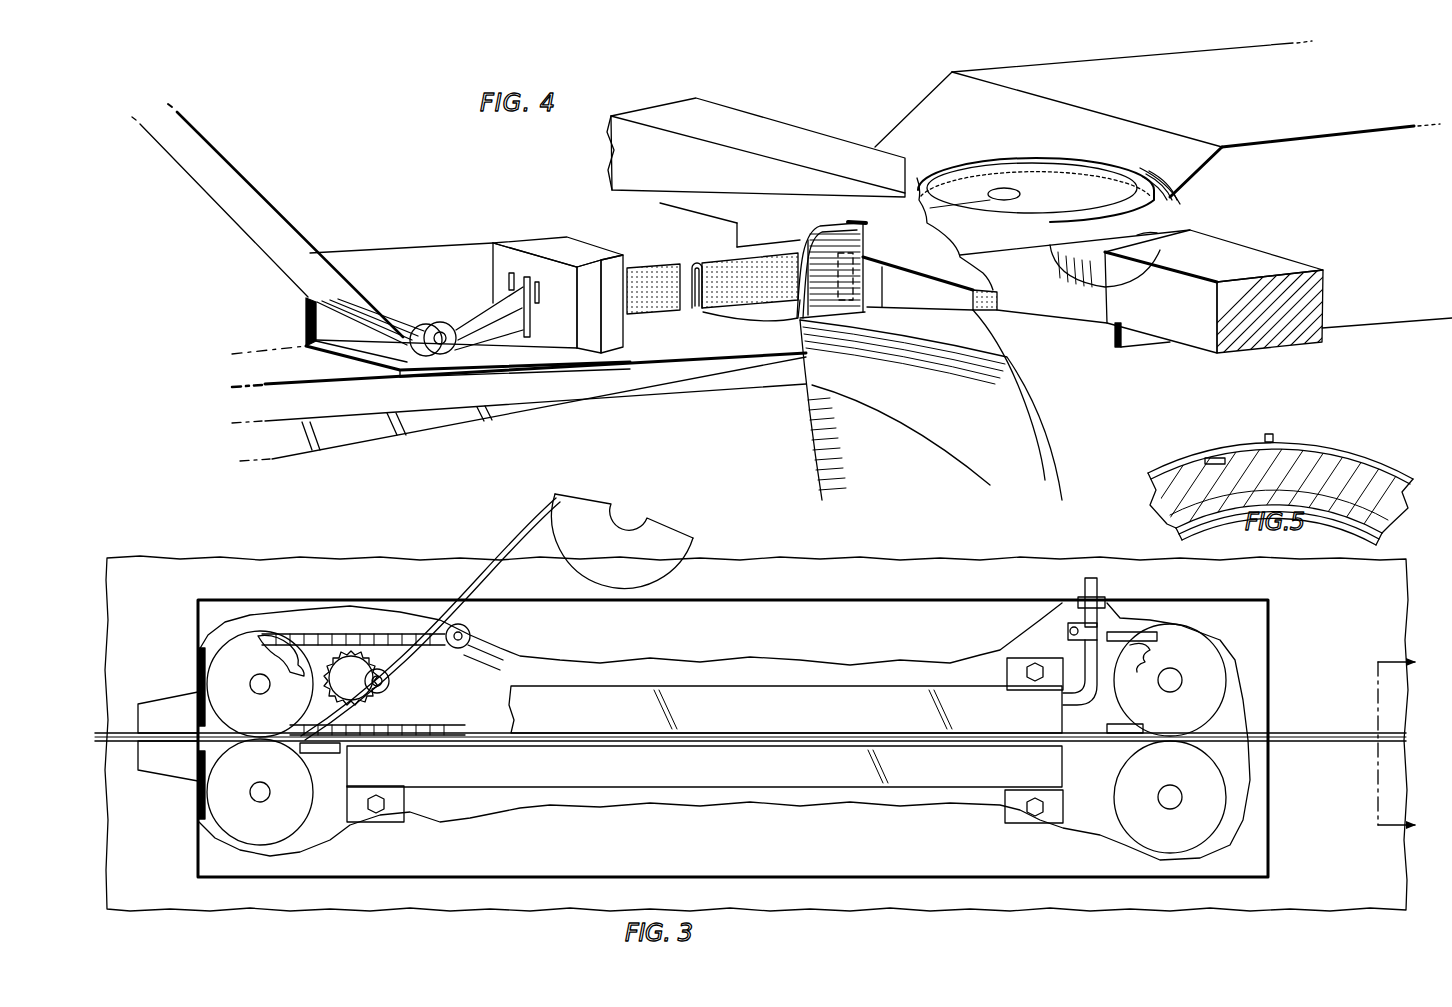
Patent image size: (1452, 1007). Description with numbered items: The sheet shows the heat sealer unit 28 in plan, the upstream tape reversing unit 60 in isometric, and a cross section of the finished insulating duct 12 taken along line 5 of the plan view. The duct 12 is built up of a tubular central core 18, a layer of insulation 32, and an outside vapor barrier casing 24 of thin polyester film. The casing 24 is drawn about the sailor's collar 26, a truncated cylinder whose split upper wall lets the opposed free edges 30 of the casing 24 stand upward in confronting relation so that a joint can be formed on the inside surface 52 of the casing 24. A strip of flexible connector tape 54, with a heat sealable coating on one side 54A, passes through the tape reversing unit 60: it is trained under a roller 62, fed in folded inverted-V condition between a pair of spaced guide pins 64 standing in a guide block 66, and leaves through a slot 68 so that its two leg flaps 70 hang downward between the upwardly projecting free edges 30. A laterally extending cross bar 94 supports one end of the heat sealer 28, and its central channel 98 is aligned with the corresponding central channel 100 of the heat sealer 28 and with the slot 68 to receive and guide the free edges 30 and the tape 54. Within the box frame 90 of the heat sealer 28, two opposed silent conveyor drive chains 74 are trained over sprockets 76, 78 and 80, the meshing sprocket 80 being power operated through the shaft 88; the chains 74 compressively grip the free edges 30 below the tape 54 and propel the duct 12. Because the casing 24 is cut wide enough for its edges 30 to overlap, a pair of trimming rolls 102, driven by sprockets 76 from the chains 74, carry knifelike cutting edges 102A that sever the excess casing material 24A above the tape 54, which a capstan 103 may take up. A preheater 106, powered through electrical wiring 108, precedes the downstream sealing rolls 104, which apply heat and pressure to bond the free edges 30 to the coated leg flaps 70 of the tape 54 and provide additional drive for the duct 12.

In FIG. 5, the insulating duct 12 is at (1369, 455).
In FIG. 3, the insulating duct 12 is at (1347, 640).
In FIG. 4, the tubular central core 18 is at (340, 432).
In FIG. 5, the tubular central core 18 is at (1348, 516).
In FIG. 4, the outside vapor barrier casing 24 is at (891, 431).
In FIG. 5, the outside vapor barrier casing 24 is at (1190, 453).
In FIG. 4, the excess casing material 24A is at (1149, 193).
In FIG. 3, the excess casing material 24A is at (512, 537).
In FIG. 4, the sailor's collar 26 is at (1004, 377).
In FIG. 4, the heat sealer unit 28 is at (994, 77).
In FIG. 3, the heat sealer unit 28 is at (777, 598).
In FIG. 4, the free edges of the casing 30 is at (827, 223).
In FIG. 3, the free edges of the casing 30 is at (138, 718).
In FIG. 4, the insulation 32 is at (303, 352).
In FIG. 5, the insulation 32 is at (1172, 497).
In FIG. 4, the inside surface of the casing 52 is at (798, 257).
In FIG. 5, the inside surface of the casing 52 is at (1226, 458).
In FIG. 4, the connector tape 54 is at (254, 226).
In FIG. 5, the connector tape 54 is at (1237, 462).
In FIG. 3, the connector tape 54 is at (124, 747).
In FIG. 4, the coated side of the tape 54A is at (283, 216).
In FIG. 5, the coated side of the tape 54A is at (1294, 453).
In FIG. 4, the tape reversing unit 60 is at (515, 238).
In FIG. 4, the roller 62 is at (397, 316).
In FIG. 4, the guide pins 64 is at (509, 282).
In FIG. 4, the guide block 66 is at (579, 250).
In FIG. 4, the slot 68 is at (531, 294).
In FIG. 4, the leg flaps 70 is at (690, 300).
In FIG. 3, the silent conveyor drive chains 74 is at (306, 727).
In FIG. 3, the sprocket 76 is at (290, 661).
In FIG. 3, the sprocket 78 is at (413, 658).
In FIG. 3, the sprocket 80 is at (1140, 660).
In FIG. 3, the shaft of heat sealer 88 is at (1172, 688).
In FIG. 4, the box frame 90 is at (1292, 200).
In FIG. 3, the box frame 90 is at (710, 645).
In FIG. 4, the cross bar 94 is at (799, 137).
In FIG. 4, the central channel of cross bar 98 is at (857, 221).
In FIG. 4, the central channel of heat sealer 100 is at (858, 285).
In FIG. 4, the trimming rolls 102 is at (962, 180).
In FIG. 3, the trimming rolls 102 is at (244, 693).
In FIG. 4, the cutting edges 102A is at (1097, 166).
In FIG. 3, the cutting edges 102A is at (203, 716).
In FIG. 3, the capstan 103 is at (645, 567).
In FIG. 3, the sealing rolls 104 is at (1196, 656).
In FIG. 3, the preheater 106 is at (811, 685).
In FIG. 3, the electrical wiring 108 is at (1085, 584).
In FIG. 3, the section line 5— 5 is at (1412, 746).